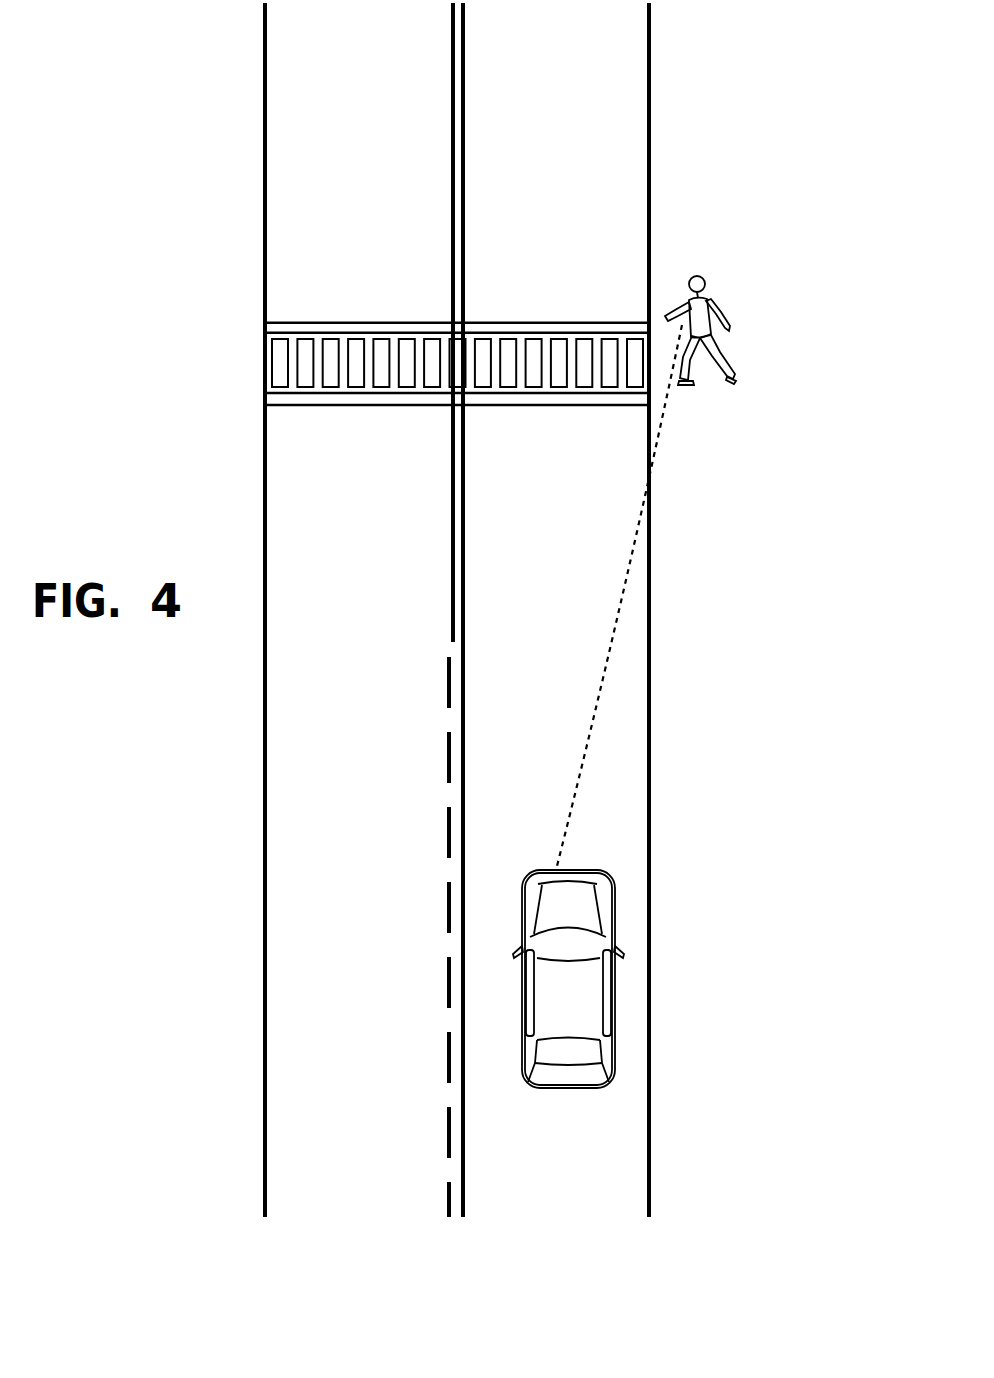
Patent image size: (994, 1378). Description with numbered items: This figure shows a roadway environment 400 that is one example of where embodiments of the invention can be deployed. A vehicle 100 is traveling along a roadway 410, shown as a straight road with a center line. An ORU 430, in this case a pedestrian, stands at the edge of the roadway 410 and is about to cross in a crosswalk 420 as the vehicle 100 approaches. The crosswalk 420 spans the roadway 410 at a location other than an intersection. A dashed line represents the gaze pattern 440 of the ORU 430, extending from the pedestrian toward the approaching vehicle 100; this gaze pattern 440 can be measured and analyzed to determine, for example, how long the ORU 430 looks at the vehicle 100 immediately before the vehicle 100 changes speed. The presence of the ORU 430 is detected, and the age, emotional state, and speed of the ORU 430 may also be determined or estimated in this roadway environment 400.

The roadway environment 400 is at (738, 90).
The roadway 410 is at (650, 203).
The crosswalk 420 is at (265, 370).
The ORU 430 is at (713, 305).
The gaze pattern 440 is at (605, 670).
The vehicle 100 is at (570, 992).